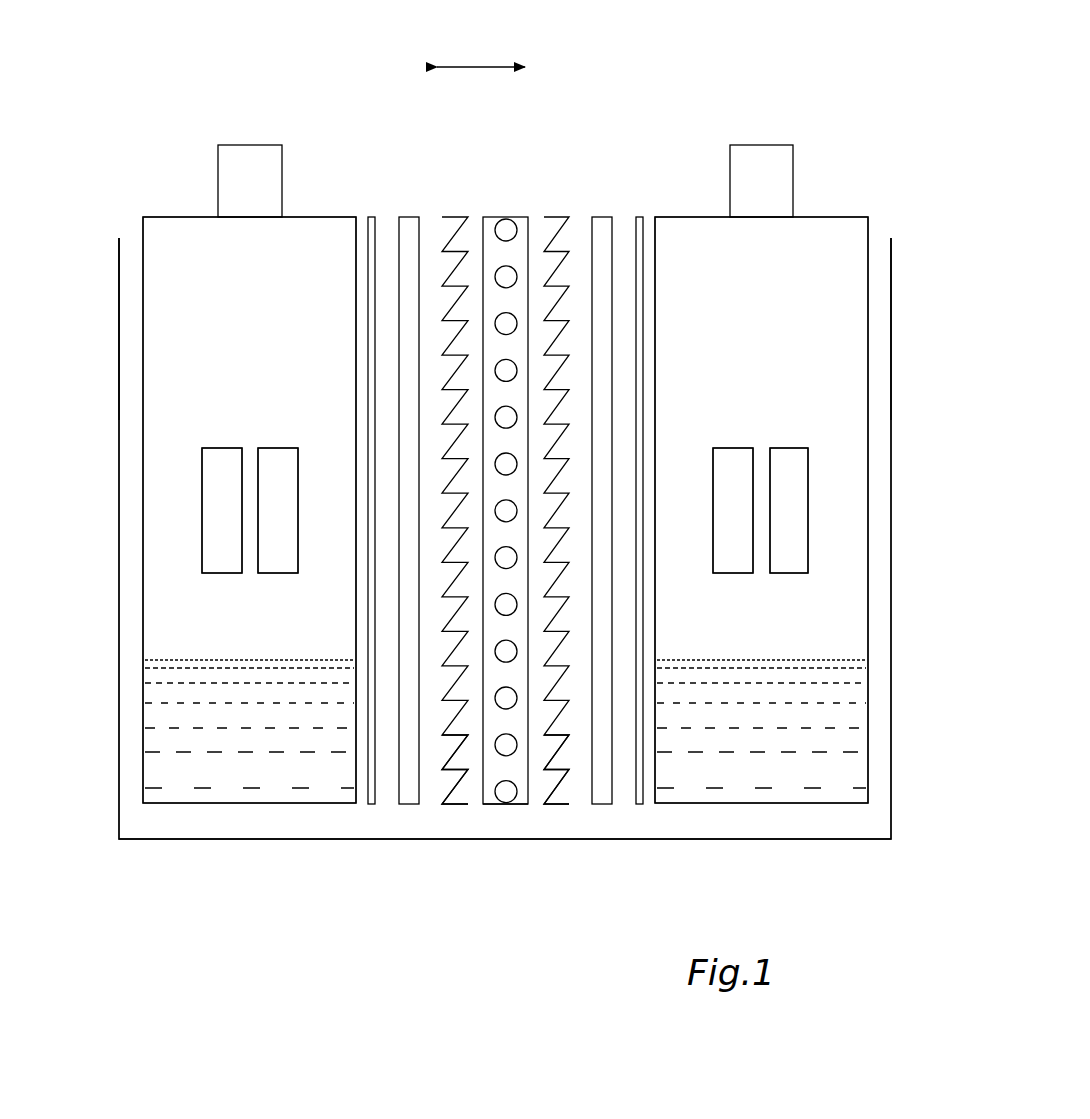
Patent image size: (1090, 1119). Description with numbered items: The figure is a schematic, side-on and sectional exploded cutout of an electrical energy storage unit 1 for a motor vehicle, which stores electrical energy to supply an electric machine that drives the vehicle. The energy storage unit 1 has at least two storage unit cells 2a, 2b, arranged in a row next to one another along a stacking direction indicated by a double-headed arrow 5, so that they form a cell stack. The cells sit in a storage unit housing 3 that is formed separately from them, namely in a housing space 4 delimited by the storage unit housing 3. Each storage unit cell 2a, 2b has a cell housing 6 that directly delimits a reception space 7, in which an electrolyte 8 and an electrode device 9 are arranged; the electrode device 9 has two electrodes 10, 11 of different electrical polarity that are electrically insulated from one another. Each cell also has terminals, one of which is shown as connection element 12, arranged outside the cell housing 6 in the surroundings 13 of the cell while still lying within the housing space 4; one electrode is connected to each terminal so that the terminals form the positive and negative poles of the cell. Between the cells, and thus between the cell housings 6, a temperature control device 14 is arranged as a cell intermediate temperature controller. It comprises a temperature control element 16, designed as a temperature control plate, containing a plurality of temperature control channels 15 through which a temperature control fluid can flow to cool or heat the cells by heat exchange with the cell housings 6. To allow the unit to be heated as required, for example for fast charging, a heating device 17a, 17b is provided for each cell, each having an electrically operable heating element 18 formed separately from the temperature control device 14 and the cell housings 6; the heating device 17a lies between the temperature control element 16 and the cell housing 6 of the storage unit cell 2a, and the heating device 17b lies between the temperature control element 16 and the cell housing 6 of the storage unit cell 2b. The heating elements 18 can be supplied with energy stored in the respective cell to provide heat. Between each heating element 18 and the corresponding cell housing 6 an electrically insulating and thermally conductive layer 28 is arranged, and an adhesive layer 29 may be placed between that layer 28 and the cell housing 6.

The electrical energy storage unit 1 is at (812, 125).
The storage unit cell 2a is at (185, 228).
The storage unit cell 2b is at (828, 227).
The storage unit housing 3 is at (119, 593).
The housing space 4 is at (130, 743).
The double-headed arrow 5 is at (481, 66).
The cell housing 6 is at (143, 303).
The reception space 7 is at (260, 396).
The electrolyte 8 is at (235, 762).
The electrode device 9 is at (208, 500).
The electrode 10 is at (223, 560).
The electrode 11 is at (283, 560).
The connection element 12 is at (258, 158).
The surroundings 13 is at (190, 124).
The temperature control device 14 is at (505, 204).
The temperature control channels 15 is at (506, 276).
The temperature control element 16 is at (497, 806).
The heating device 17a is at (454, 808).
The heating device 17b is at (557, 808).
The heating element 18 is at (463, 748).
The electrically insulating and thermally conductive layer 28 is at (409, 217).
The adhesive layer 29 is at (371, 217).